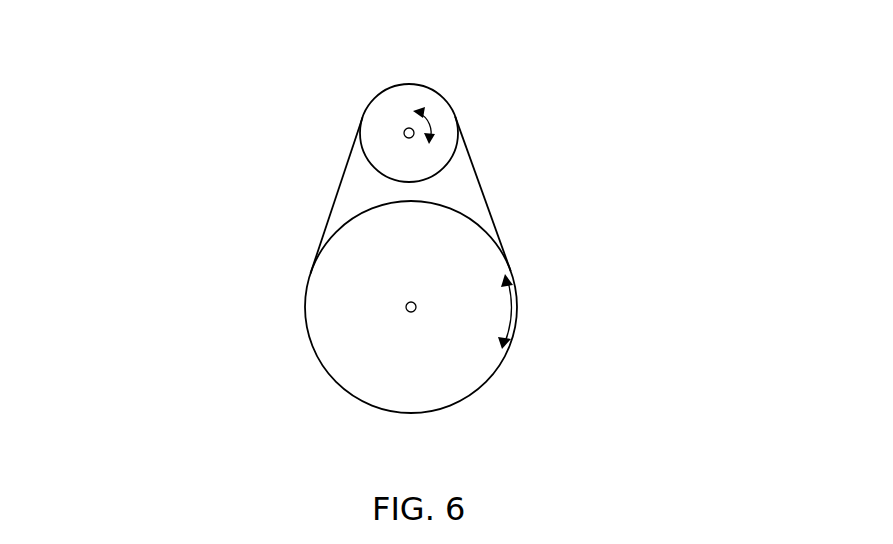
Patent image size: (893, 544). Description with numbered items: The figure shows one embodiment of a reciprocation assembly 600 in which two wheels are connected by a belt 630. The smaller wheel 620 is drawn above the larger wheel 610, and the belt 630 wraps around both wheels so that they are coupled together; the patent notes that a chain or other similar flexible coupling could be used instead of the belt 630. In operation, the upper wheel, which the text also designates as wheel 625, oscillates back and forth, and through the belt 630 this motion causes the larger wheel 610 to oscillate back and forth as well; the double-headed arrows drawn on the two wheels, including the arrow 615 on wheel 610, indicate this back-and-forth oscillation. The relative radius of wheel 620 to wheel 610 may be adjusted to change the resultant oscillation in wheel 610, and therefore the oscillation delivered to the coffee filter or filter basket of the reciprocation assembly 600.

The reciprocation assembly 600 is at (176, 199).
The wheel 610 is at (306, 336).
The rotation direction of large pulley 615 is at (511, 335).
The wheel 620 is at (451, 128).
The wheel 625 is at (431, 118).
The belt 630 is at (484, 193).